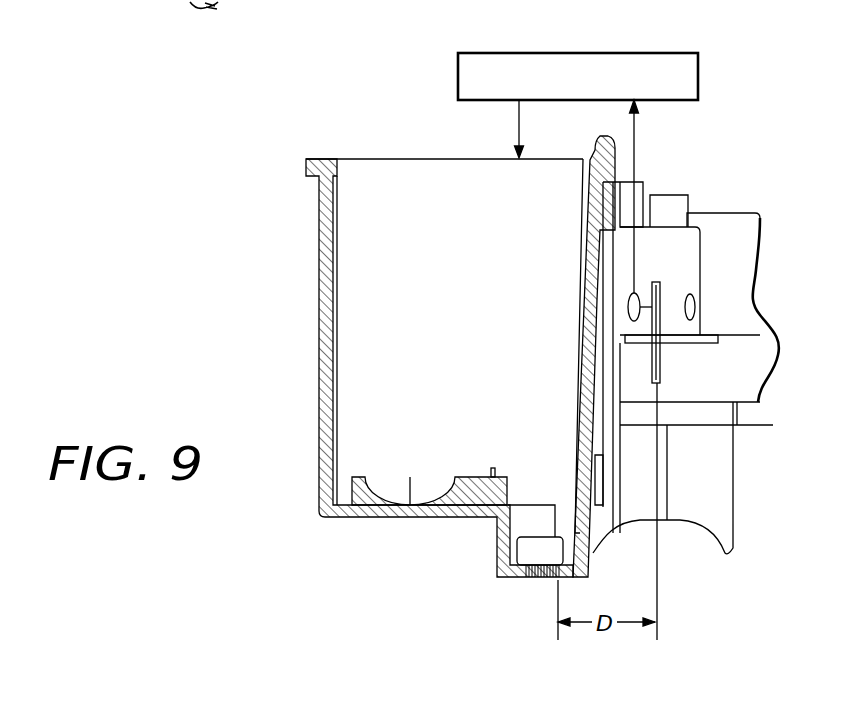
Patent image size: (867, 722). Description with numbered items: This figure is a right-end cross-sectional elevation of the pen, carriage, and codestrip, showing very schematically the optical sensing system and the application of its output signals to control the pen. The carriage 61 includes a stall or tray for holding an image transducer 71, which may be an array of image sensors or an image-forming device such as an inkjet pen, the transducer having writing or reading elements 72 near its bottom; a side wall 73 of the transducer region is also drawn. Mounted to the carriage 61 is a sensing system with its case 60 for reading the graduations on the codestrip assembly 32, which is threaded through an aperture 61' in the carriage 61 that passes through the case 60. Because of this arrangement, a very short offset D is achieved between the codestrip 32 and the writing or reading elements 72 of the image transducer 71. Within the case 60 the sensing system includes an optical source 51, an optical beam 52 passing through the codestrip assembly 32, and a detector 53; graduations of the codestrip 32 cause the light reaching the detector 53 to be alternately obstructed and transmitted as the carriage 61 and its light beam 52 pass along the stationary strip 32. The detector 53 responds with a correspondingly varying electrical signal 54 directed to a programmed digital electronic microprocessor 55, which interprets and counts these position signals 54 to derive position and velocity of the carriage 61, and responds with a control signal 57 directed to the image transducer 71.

The microprocessor 55 is at (550, 53).
The control signal 57 is at (519, 118).
The electrical signal 54 is at (634, 145).
The container side wall 73 is at (375, 175).
The image transducer 71 is at (439, 368).
The writing or reading elements 72 is at (540, 577).
The detector 53 is at (622, 322).
The case 60 is at (698, 238).
The aperture 61' is at (727, 281).
The codestrip assembly 32 is at (662, 300).
The optical source 51 is at (695, 310).
The optical beam 52 is at (665, 340).
The carriage 61 is at (698, 448).